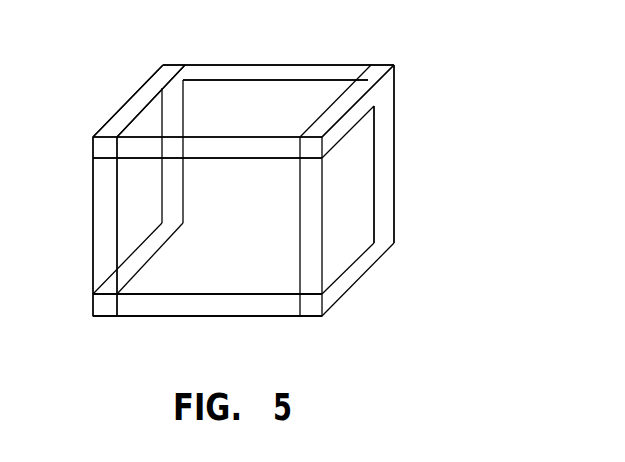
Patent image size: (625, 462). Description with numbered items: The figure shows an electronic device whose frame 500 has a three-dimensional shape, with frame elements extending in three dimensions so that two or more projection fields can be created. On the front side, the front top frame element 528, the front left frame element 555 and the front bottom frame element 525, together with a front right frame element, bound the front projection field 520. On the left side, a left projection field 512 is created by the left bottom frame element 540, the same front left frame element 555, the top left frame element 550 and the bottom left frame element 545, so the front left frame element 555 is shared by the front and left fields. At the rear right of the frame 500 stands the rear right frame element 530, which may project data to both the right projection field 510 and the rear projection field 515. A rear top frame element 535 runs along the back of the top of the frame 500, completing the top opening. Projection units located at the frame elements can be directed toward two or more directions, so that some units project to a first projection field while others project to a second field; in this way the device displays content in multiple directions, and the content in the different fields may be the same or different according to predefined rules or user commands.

The frame 500 is at (295, 183).
The right projection field 510 is at (357, 162).
The left projection field 512 is at (126, 203).
The rear projection field 515 is at (305, 97).
The front projection field 520 is at (222, 286).
The front bottom frame element 525 is at (268, 306).
The front top frame element 528 is at (260, 150).
The rear right frame element 530 is at (385, 213).
The rear top rail 535 is at (258, 64).
The left bottom frame element 540 is at (135, 265).
The bottom left frame element 545 is at (185, 110).
The top left frame element 550 is at (135, 93).
The front left frame element 555 is at (93, 258).